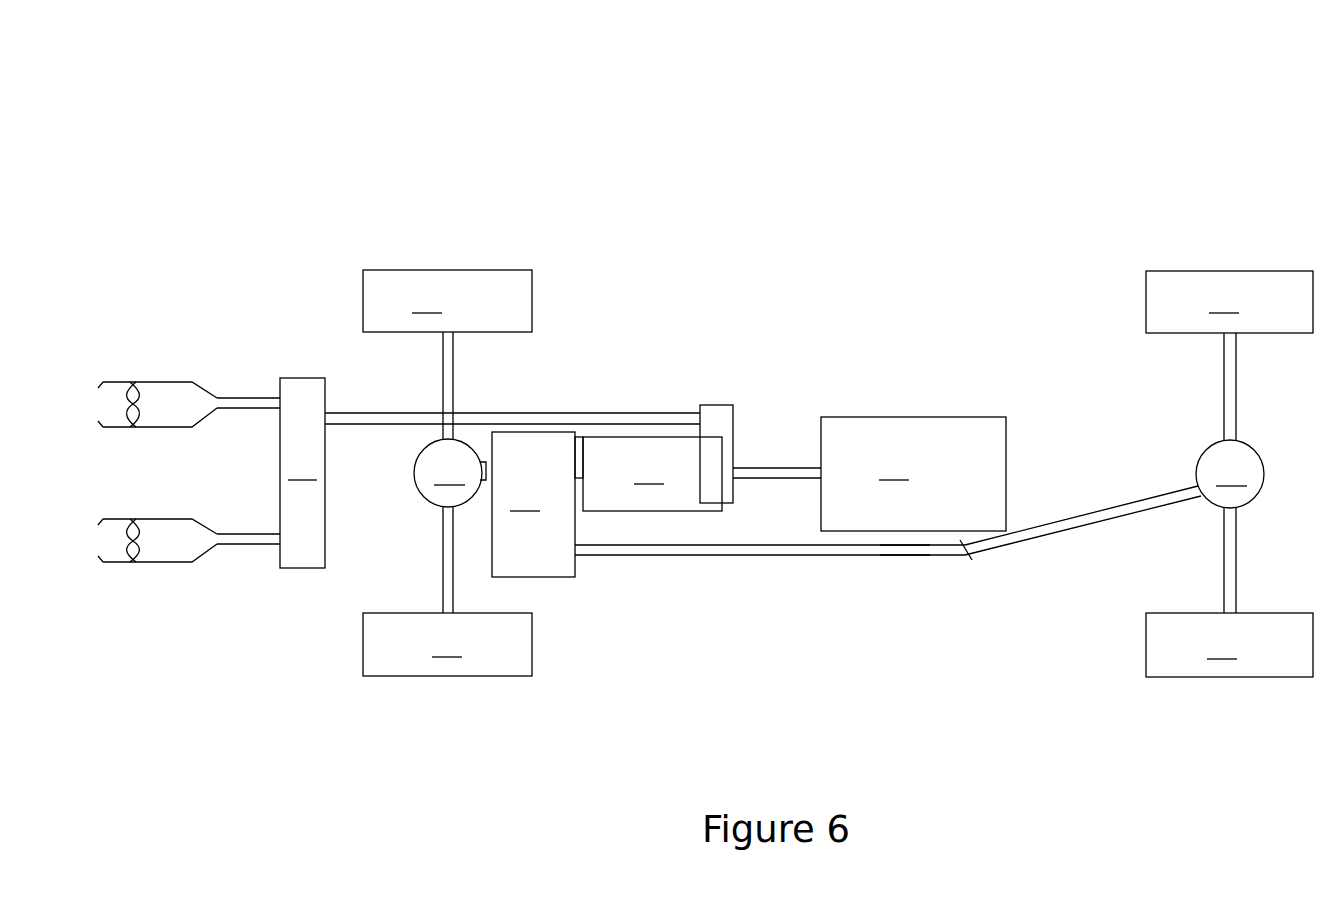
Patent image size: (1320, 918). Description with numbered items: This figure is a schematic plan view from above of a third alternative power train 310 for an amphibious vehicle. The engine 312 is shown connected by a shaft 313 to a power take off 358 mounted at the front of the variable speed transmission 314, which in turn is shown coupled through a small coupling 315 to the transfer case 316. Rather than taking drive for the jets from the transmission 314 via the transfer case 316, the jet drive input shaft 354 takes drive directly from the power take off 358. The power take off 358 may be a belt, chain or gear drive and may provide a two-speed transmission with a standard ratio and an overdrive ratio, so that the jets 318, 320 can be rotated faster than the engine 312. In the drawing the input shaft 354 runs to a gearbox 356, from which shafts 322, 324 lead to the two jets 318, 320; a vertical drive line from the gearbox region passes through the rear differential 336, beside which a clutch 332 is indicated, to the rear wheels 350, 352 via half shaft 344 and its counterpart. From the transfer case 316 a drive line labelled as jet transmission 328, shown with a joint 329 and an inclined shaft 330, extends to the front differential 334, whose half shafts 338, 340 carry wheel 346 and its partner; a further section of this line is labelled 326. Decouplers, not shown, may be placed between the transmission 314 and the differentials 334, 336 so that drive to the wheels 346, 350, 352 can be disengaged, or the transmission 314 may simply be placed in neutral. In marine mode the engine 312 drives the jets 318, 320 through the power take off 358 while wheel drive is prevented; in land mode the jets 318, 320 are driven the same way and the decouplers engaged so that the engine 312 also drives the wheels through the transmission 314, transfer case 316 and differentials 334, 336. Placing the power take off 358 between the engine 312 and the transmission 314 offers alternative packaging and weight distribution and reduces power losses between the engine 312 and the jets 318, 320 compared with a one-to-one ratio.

The power train 310 is at (801, 136).
The engine 312 is at (913, 474).
The engine output shaft 313 is at (789, 478).
The variable speed transmission 314 is at (652, 474).
The coupling 315 is at (580, 440).
The transfer case 316 is at (533, 504).
The jet 318 is at (180, 386).
The jet 320 is at (185, 553).
The first propeller shaft 322 is at (253, 402).
The second propeller shaft 324 is at (250, 540).
The drive shaft section 326 is at (904, 568).
The jet transmission 328 is at (780, 548).
The universal joint 329 is at (967, 557).
The angled drive shaft 330 is at (1095, 513).
The clutch 332 is at (483, 470).
The front differential 334 is at (1230, 474).
The rear differential 336 is at (448, 473).
The rear axle half-shaft 338 is at (1232, 388).
The rear axle half-shaft 340 is at (1230, 580).
The front axle half-shaft 344 is at (443, 582).
The wheel 346 is at (1229, 302).
The wheel 350 is at (447, 301).
The wheel 352 is at (447, 644).
The jet drive input shaft 354 is at (390, 420).
The propeller gearbox 356 is at (302, 473).
The power take off 358 is at (718, 422).